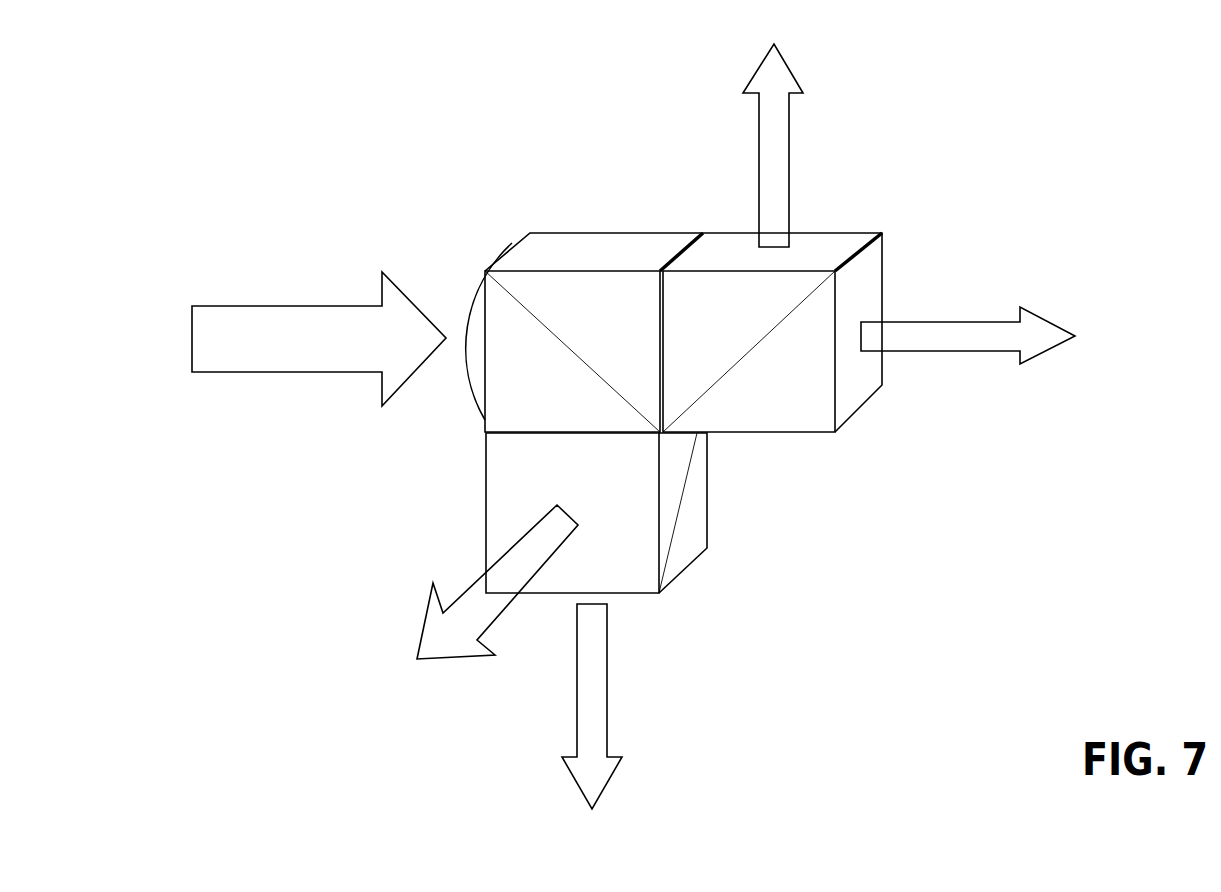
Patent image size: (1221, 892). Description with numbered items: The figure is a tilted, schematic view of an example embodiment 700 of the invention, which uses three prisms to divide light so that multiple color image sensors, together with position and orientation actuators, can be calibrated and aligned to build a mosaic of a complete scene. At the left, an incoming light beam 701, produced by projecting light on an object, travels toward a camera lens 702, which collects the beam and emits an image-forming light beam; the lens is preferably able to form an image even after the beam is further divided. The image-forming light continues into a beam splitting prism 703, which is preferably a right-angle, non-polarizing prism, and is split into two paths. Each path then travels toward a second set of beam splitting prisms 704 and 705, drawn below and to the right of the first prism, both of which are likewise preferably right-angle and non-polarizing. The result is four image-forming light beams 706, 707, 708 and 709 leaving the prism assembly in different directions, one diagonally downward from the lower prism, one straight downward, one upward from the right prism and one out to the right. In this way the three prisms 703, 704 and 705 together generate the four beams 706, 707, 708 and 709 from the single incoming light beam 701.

The example embodiment 700 is at (347, 127).
The incoming light beam 701 is at (306, 306).
The camera lens 702 is at (486, 252).
The beam splitting prism 703 is at (578, 233).
The beam splitting prism 704 is at (486, 515).
The beam splitting prism 705 is at (882, 252).
The image-forming light beam 706 is at (483, 618).
The image-forming light beam 707 is at (608, 662).
The image-forming light beam 708 is at (789, 147).
The image-forming light beam 709 is at (923, 350).